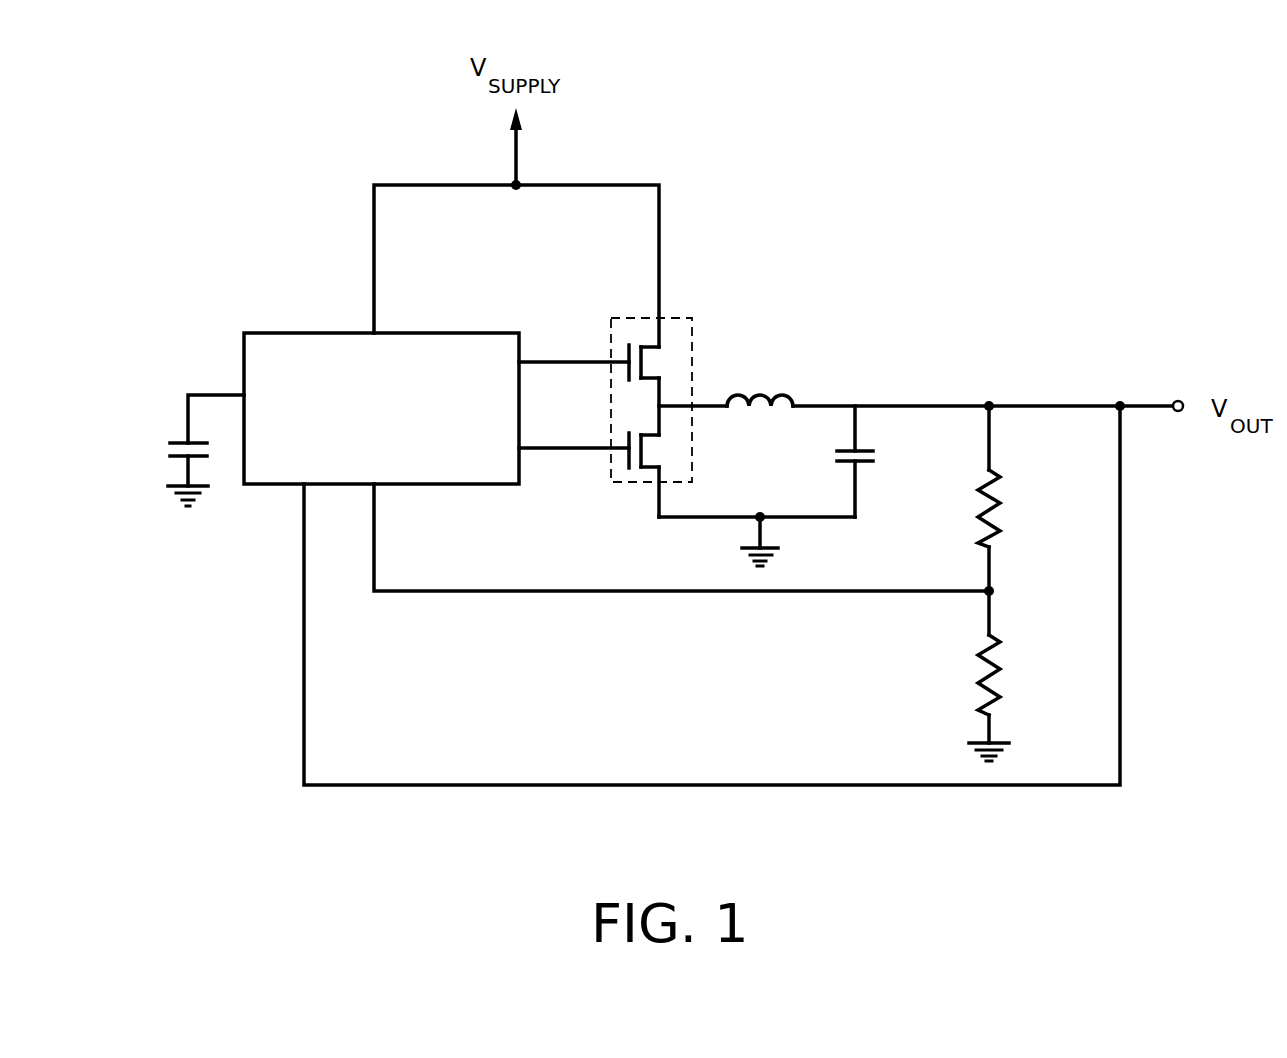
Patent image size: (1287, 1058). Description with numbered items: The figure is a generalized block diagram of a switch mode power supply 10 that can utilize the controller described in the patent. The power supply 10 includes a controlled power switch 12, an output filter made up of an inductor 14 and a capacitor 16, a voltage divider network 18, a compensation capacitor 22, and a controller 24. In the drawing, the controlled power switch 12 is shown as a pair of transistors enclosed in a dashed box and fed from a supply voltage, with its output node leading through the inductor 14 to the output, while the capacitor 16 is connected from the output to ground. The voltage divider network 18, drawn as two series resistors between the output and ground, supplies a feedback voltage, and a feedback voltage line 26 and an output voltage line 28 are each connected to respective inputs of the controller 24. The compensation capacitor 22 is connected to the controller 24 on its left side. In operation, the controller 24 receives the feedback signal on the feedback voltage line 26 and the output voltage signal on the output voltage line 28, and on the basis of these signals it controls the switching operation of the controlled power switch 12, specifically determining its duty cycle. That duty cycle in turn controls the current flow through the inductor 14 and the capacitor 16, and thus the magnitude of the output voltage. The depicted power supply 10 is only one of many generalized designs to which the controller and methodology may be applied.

The power supply 10 is at (853, 150).
The controlled power switch 12 is at (682, 318).
The inductor 14 is at (770, 393).
The capacitor 16 is at (865, 447).
The voltage divider network 18 is at (1023, 465).
The compensation capacitor 22 is at (173, 442).
The controller 24 is at (438, 332).
The feedback voltage line 26 is at (600, 592).
The output voltage line 28 is at (607, 783).